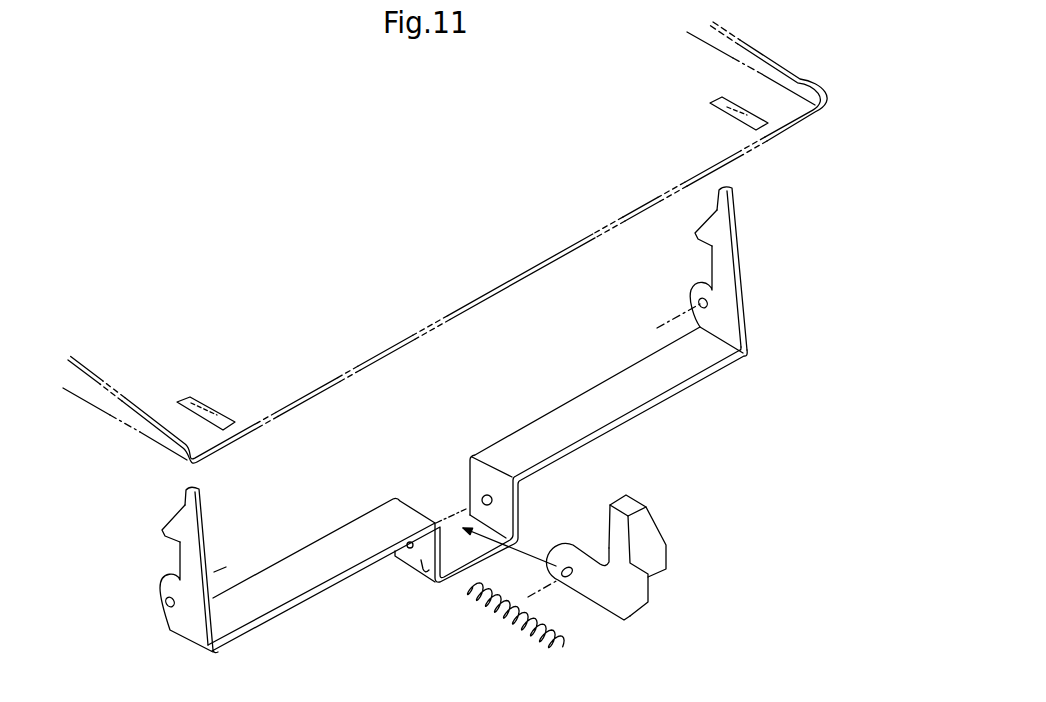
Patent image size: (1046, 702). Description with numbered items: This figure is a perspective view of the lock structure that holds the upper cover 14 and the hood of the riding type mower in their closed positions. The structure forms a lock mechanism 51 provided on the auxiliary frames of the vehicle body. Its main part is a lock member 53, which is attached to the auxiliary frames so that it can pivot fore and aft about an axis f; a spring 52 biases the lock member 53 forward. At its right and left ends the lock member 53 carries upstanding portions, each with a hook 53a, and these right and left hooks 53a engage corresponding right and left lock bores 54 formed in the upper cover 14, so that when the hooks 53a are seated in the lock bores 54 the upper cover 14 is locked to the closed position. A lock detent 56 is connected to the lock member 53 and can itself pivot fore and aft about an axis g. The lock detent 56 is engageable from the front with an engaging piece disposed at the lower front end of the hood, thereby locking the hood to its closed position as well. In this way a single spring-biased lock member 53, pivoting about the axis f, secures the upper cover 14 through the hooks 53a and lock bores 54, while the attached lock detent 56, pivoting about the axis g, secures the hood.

The upper cover 14 is at (473, 312).
The lock mechanism 51 is at (733, 453).
The spring 52 is at (493, 617).
The lock member 53 is at (215, 519).
The hooks 53a is at (170, 537).
The lock bores 54 is at (721, 101).
The lock detent 56 is at (652, 536).
The axis f is at (166, 606).
The axis g is at (456, 512).